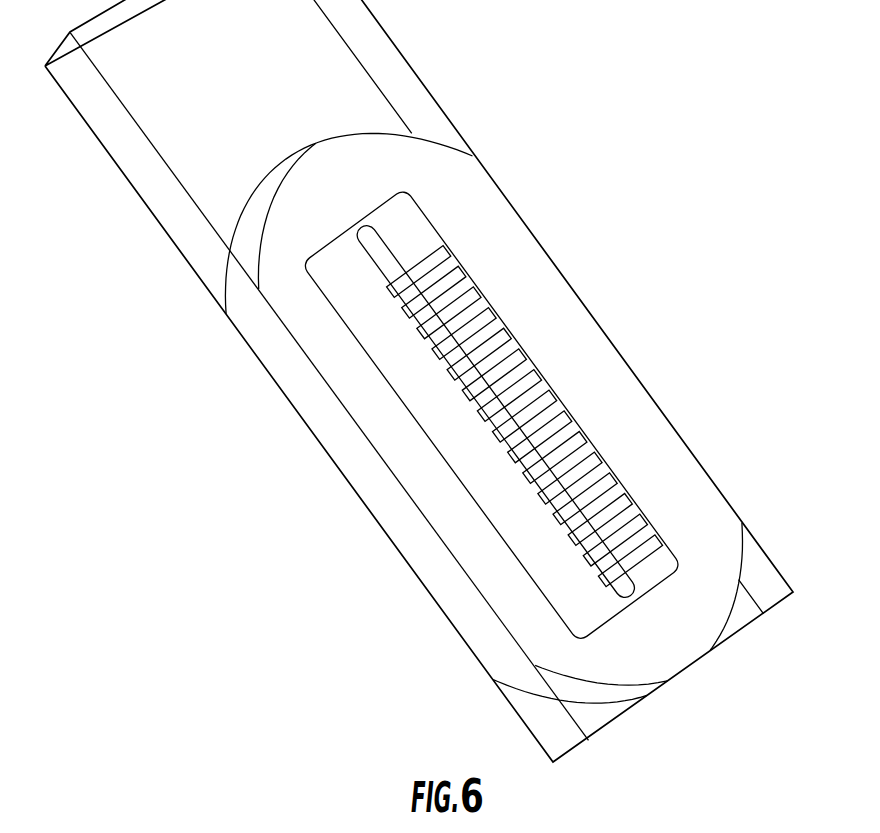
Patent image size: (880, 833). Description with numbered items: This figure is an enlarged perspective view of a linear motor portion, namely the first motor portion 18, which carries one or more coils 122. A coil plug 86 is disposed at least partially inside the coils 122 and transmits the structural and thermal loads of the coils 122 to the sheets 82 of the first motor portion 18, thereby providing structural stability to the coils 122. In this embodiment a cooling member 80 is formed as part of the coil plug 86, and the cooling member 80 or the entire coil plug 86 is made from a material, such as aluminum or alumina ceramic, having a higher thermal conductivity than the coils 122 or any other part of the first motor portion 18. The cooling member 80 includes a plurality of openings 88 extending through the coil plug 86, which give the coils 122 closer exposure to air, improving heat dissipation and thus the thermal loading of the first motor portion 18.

The first motor portion 18 is at (577, 120).
The cooling member 80 is at (551, 383).
The sheets 82 is at (766, 575).
The coil plug 86 is at (413, 241).
The openings 88 is at (531, 472).
The coils 122 is at (667, 443).